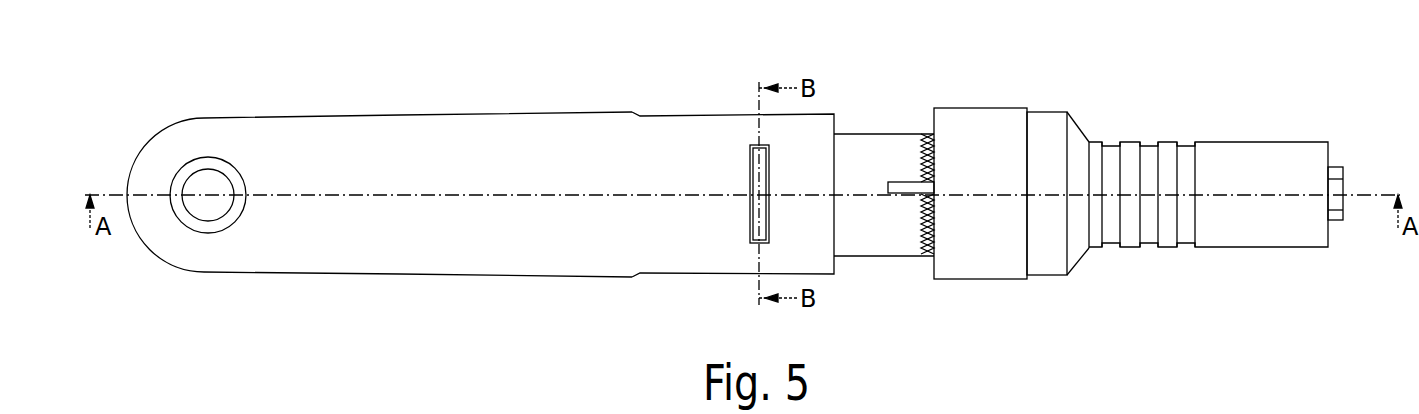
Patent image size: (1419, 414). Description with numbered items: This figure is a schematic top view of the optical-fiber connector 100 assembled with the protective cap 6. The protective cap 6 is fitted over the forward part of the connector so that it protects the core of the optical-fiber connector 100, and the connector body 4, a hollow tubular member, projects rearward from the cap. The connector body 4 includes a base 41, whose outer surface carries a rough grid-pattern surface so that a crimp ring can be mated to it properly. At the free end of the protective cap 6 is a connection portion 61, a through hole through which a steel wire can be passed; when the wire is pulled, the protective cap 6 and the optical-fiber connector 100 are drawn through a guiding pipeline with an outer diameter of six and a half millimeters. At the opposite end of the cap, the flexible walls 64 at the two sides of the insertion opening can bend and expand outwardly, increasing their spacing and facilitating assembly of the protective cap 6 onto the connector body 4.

The optical-fiber connector 100 is at (1220, 85).
The protective cap 6 is at (502, 245).
The connection portion 61 is at (217, 180).
The flexible wall 64 is at (822, 122).
The base 41 is at (873, 237).
The connector body 4 is at (1058, 132).